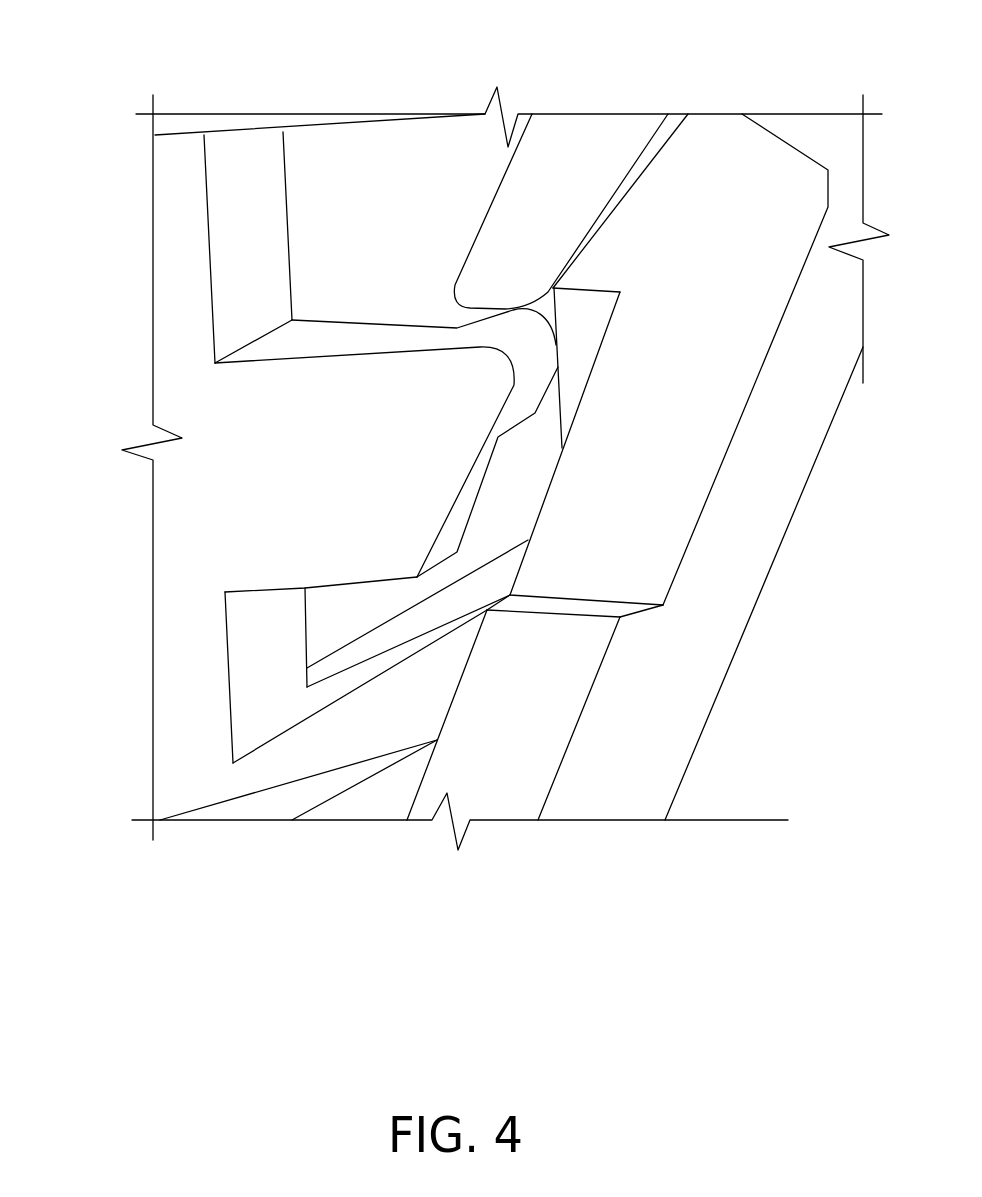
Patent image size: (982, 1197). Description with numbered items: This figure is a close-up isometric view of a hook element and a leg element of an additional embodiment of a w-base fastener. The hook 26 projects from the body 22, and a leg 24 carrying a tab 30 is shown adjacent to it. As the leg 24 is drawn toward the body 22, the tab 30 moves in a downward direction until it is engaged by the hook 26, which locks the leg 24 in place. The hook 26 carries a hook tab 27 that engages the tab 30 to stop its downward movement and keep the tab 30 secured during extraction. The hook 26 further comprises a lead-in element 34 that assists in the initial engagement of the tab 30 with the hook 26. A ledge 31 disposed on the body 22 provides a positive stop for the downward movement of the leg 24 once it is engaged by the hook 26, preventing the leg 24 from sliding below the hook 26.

The body 22 is at (228, 220).
The leg 24 is at (690, 668).
The hook 26 is at (333, 468).
The hook tab 27 is at (523, 425).
The tab 30 is at (575, 150).
The ledge 31 is at (360, 647).
The lead-in element 34 is at (482, 332).